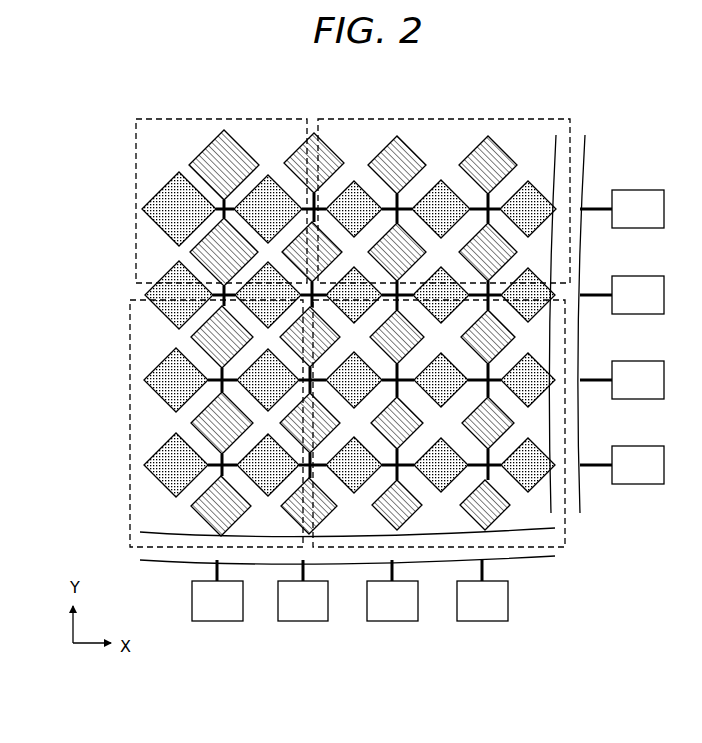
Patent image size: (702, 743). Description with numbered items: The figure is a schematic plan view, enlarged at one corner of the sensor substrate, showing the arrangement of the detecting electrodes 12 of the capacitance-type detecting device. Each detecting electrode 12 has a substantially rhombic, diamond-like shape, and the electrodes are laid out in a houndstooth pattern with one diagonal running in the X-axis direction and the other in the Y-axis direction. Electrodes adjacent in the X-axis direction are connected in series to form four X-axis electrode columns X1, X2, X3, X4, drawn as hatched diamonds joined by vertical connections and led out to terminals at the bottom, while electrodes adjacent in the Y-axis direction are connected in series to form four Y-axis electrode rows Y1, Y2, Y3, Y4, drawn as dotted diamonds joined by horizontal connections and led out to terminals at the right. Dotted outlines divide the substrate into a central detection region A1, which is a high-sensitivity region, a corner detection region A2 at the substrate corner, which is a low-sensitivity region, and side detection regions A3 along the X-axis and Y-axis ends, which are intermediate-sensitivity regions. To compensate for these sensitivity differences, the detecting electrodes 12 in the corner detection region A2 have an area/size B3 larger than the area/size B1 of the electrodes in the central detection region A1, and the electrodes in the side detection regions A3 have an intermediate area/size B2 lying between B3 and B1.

The detecting electrodes 12 is at (348, 385).
The area/size of detecting electrodes in central detection region B1 is at (346, 500).
The area/size of detecting electrodes in side detection region B2 is at (358, 195).
The area/size of detecting electrodes in corner detection region B3 is at (178, 200).
The central detection region A1 is at (560, 552).
The corner detection region A2 is at (262, 119).
The side detection region A3 is at (552, 119).
The X-axis electrode column X1 is at (217, 590).
The X-axis electrode column X2 is at (303, 590).
The X-axis electrode column X3 is at (392, 590).
The X-axis electrode column X4 is at (482, 590).
The Y-axis electrode row Y1 is at (622, 209).
The Y-axis electrode row Y2 is at (622, 295).
The Y-axis electrode row Y3 is at (622, 380).
The Y-axis electrode row Y4 is at (622, 465).